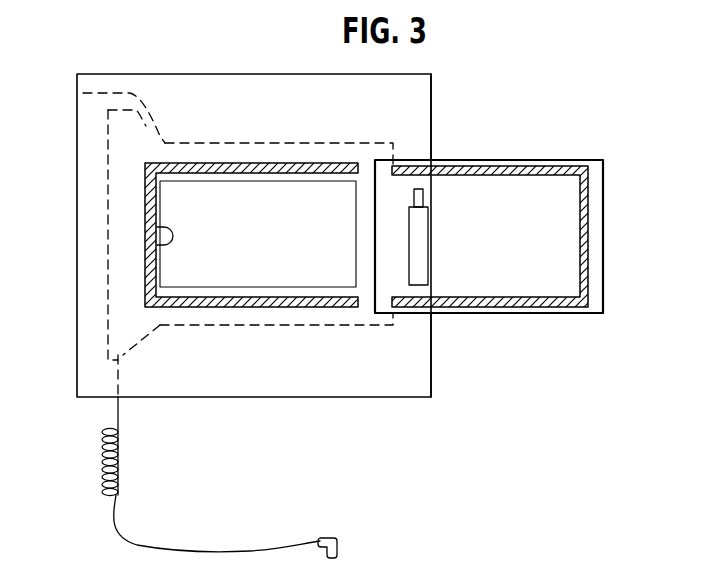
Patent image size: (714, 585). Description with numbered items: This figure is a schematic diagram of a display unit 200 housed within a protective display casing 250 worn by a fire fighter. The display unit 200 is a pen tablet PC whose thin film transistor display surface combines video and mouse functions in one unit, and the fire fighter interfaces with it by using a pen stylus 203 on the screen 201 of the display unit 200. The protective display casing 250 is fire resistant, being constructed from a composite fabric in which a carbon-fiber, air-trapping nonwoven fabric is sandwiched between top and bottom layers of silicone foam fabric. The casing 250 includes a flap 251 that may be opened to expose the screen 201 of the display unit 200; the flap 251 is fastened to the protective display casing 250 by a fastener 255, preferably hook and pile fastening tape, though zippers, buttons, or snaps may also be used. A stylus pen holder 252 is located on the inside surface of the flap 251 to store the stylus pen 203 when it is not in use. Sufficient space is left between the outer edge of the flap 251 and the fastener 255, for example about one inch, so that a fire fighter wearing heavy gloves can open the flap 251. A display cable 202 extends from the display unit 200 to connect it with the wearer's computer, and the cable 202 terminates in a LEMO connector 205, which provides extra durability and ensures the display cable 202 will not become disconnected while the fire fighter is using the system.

The display unit 200 is at (77, 95).
The screen 201 is at (157, 232).
The display cable 202 is at (118, 415).
The pen stylus 203 is at (423, 196).
The LEMO connector 205 is at (338, 540).
The protective display casing 250 is at (431, 106).
The flap 251 is at (603, 249).
The stylus pen holder 252 is at (428, 270).
The fastener 255 is at (215, 163).